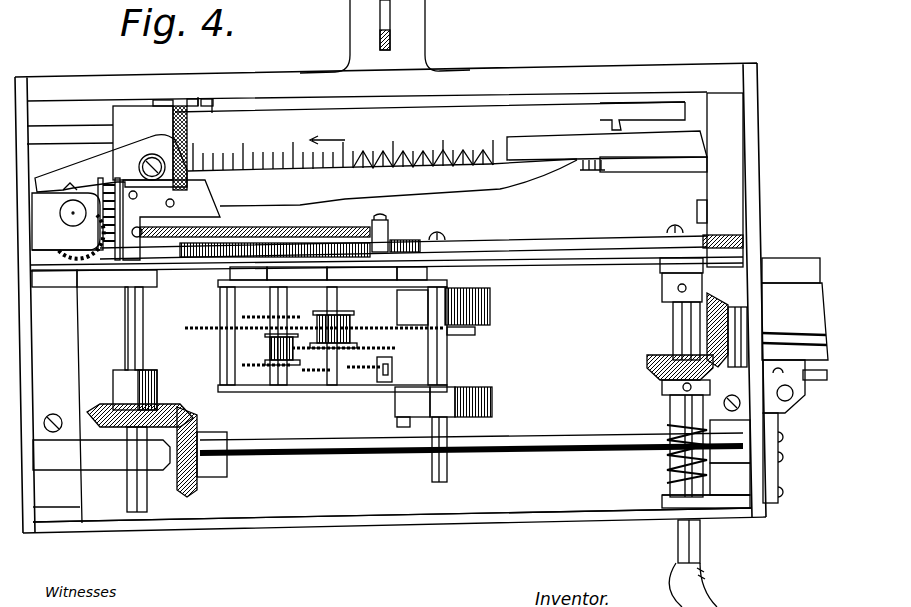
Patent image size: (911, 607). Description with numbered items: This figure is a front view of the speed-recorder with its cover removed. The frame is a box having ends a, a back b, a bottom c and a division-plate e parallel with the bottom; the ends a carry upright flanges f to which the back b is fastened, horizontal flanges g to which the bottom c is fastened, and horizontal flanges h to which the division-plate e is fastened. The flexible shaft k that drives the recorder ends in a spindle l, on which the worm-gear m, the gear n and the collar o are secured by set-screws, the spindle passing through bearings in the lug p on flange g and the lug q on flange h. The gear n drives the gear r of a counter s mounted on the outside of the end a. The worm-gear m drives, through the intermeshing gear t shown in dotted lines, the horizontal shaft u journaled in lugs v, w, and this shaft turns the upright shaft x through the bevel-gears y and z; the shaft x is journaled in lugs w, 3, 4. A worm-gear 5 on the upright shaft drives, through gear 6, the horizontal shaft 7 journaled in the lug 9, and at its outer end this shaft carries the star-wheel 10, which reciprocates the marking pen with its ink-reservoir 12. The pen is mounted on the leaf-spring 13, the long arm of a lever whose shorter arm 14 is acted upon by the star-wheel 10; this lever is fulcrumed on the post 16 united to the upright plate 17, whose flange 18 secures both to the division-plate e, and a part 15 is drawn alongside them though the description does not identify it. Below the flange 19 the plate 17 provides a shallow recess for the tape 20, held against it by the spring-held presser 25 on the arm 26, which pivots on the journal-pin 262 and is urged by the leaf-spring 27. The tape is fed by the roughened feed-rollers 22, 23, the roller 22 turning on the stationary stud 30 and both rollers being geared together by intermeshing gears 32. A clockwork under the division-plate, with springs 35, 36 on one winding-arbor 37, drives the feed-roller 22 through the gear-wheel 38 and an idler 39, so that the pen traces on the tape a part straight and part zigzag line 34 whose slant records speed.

The lug 3 is at (100, 278).
The lug 4 is at (70, 132).
The worm-gear 5 is at (105, 219).
The intermeshing gear 6 is at (81, 237).
The horizontal shaft 7 is at (70, 213).
The lug 9 is at (66, 248).
The star-wheel 10 is at (70, 190).
The ink-reservoir 12 is at (607, 151).
The leaf-spring 13 is at (398, 182).
The lever-arm 14 is at (111, 163).
The rack spring 15 is at (251, 219).
The post 16 is at (266, 183).
The upright plate 17 is at (490, 218).
The flange 18 is at (543, 247).
The flange 19 is at (592, 102).
The tape 20 is at (477, 114).
The feed-roller 22 is at (200, 96).
The feed-roller 23 is at (180, 102).
The spring-held presser 25 is at (643, 126).
The arm 26 is at (725, 180).
The leaf-spring 27 is at (720, 240).
The stationary stud 30 is at (215, 98).
The intermeshing gear 32 is at (215, 262).
The line 34 is at (370, 145).
The spring 35 is at (490, 295).
The spring 36 is at (443, 407).
The winding-arbor 37 is at (447, 470).
The gear-wheel 38 is at (347, 324).
The idler 39 is at (266, 324).
The journal-pin 262 is at (697, 205).
The end a is at (28, 110).
The back b is at (550, 75).
The bottom c is at (373, 520).
The division-plate e is at (553, 258).
The upright flange f is at (401, 424).
The horizontal flange g is at (68, 518).
The horizontal flange h is at (732, 264).
The flexible shaft k is at (698, 565).
The spindle l is at (673, 325).
The worm-gear m is at (668, 465).
The gear n is at (650, 370).
The collar o is at (662, 288).
The lug p is at (662, 497).
The lug q is at (660, 265).
The gear r is at (712, 305).
The counter s is at (795, 335).
The intermeshing gear t is at (670, 413).
The horizontal shaft u is at (573, 450).
The lug v is at (740, 430).
The lug w is at (101, 455).
The upright shaft x is at (142, 318).
The bevel-gear y is at (195, 427).
The bevel-gear z is at (168, 402).